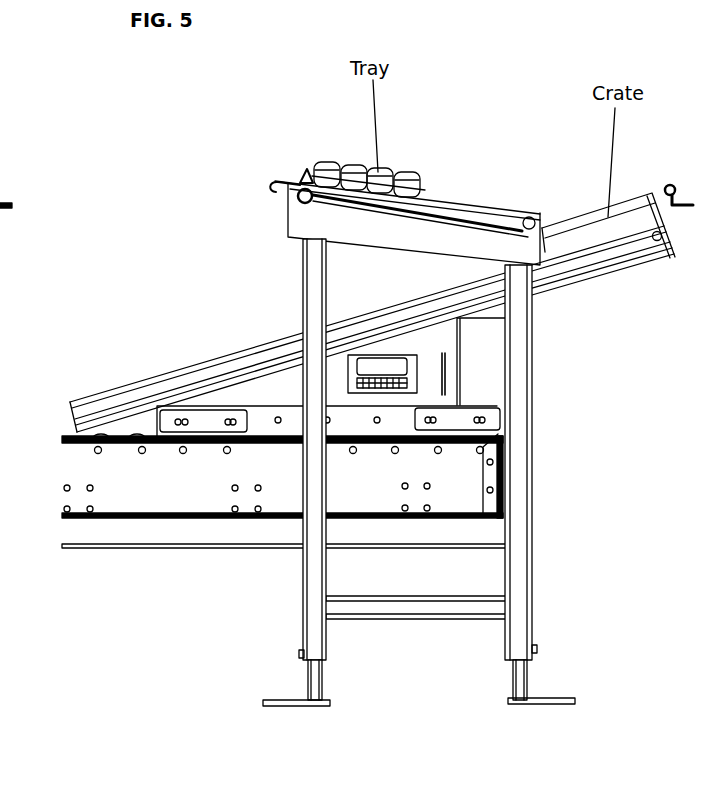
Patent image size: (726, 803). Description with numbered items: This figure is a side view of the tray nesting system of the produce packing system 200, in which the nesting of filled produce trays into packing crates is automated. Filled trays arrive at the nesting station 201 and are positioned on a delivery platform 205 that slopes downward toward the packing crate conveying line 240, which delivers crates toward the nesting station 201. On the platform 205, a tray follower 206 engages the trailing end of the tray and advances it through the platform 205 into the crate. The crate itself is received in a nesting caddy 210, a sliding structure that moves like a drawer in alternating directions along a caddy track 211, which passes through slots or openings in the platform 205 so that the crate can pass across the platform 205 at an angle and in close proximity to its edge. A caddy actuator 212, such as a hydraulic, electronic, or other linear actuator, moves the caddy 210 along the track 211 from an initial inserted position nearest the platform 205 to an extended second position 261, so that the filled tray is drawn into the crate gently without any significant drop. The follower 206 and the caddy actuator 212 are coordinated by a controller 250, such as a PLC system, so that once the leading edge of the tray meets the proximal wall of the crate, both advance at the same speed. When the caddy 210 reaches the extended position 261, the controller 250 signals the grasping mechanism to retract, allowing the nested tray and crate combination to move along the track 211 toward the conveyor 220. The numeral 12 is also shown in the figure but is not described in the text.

The produce packing system 200 is at (152, 637).
The nesting station 201 is at (600, 308).
The delivery platform 205 is at (465, 203).
The tray follower 206 is at (306, 173).
The nesting caddy 210 is at (663, 187).
The caddy track 211 is at (533, 350).
The caddy actuator 212 is at (494, 292).
The conveyor 220 is at (68, 473).
The packing crate conveying line 240 is at (0, 123).
The controller 250 is at (413, 387).
The extended second position 261 is at (660, 275).
The guide member 12 is at (12, 327).